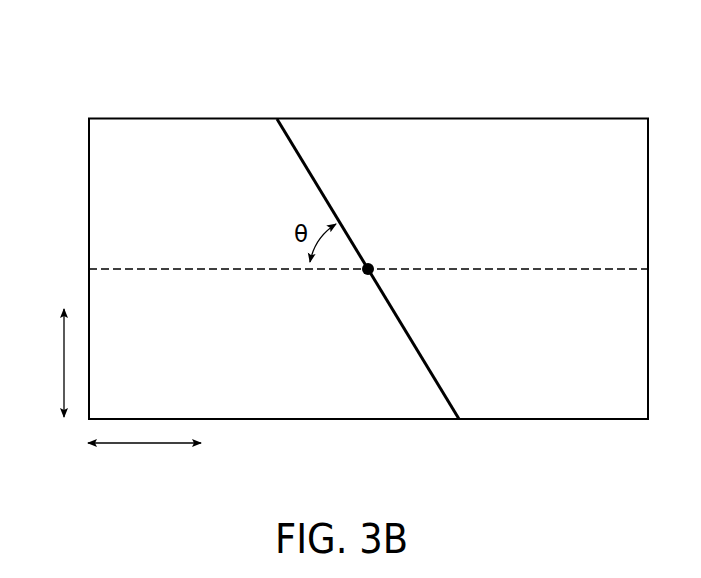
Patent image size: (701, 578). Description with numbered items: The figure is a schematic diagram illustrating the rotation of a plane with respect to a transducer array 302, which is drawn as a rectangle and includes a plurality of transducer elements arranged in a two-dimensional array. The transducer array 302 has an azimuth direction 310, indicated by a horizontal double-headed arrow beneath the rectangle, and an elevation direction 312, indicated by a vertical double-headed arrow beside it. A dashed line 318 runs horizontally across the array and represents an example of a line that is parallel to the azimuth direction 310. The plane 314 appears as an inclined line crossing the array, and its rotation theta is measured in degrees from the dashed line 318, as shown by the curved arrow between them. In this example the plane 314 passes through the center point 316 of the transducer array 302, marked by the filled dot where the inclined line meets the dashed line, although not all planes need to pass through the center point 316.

The transducer array 302 is at (607, 152).
The azimuth direction 310 is at (144, 457).
The elevation direction 312 is at (41, 363).
The plane 314 is at (426, 370).
The center point 316 is at (372, 262).
The dashed line 318 is at (578, 267).